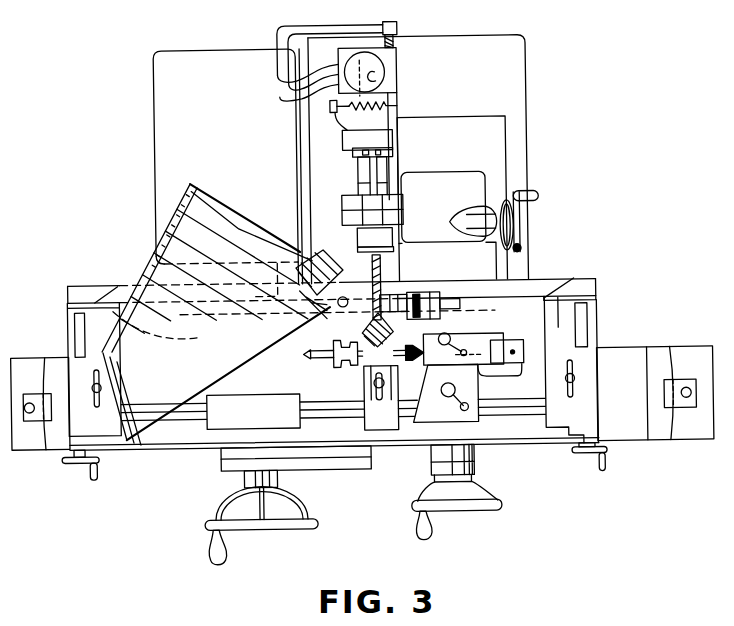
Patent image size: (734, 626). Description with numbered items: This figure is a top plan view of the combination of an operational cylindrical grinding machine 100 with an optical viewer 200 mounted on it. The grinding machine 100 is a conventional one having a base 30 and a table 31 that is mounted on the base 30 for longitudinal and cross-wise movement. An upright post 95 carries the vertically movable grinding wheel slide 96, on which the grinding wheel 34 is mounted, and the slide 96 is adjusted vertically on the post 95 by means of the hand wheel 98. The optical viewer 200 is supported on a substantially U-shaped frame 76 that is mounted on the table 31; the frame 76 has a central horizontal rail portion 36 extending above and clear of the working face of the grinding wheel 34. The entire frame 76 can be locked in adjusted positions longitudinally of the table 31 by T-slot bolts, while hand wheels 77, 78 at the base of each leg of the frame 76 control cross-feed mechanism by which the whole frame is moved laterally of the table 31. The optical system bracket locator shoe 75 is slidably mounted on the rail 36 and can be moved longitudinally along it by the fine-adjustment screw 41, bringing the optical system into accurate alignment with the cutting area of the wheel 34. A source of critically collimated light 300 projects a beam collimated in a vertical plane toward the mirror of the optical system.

The base 30 is at (531, 146).
The source of critically collimated light 300 is at (404, 101).
The upright post 95 is at (463, 184).
The grinding wheel slide 96 is at (439, 258).
The hand wheel 98 is at (536, 217).
The central horizontal rail portion 36 is at (531, 296).
The U-shaped frame 76 is at (603, 332).
The table 31 is at (636, 361).
The cylindrical grinding machine 100 is at (215, 472).
The hand wheel 77 is at (91, 471).
The hand wheel 78 is at (578, 465).
The grinding wheel 34 is at (369, 273).
The fine-adjustment screw 41 is at (418, 292).
The optical viewer 200 is at (138, 251).
The optical system bracket locator shoe 75 is at (278, 262).